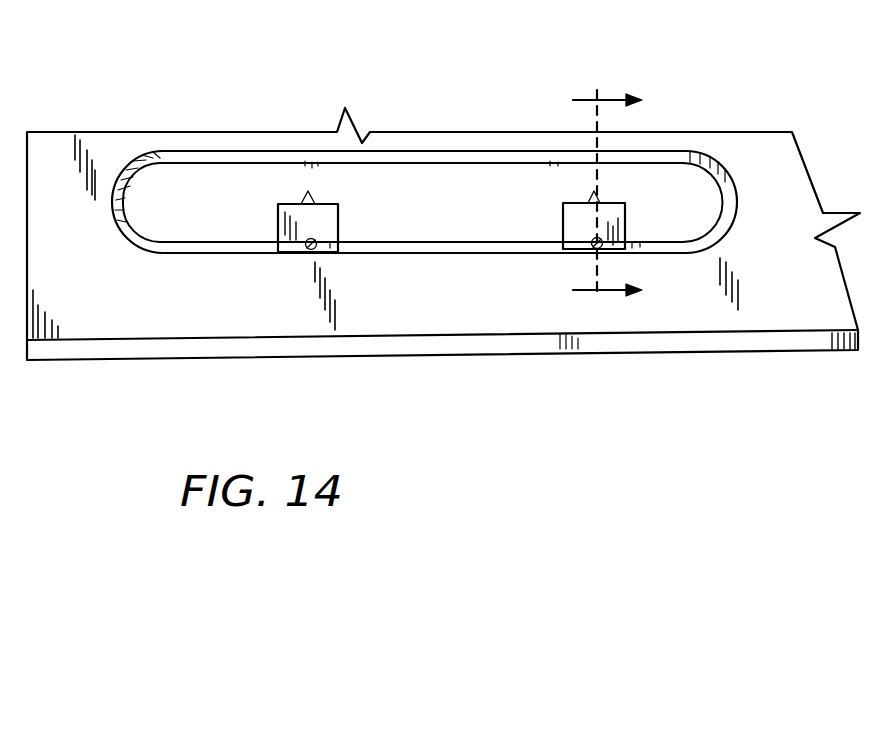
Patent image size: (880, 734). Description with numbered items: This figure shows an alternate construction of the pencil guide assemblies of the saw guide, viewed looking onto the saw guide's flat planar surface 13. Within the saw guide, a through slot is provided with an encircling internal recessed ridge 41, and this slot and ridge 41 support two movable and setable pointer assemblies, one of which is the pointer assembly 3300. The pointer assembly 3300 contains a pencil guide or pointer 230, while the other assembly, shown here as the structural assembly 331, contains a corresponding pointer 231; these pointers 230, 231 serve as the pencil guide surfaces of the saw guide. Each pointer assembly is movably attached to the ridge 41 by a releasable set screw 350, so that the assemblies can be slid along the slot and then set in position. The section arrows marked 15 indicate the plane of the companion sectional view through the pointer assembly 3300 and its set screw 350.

The second flat planar surface 13 is at (757, 158).
The recessed ridge 41 is at (258, 248).
The pointer 231 is at (304, 196).
The pencil guide surface structural assembly 331 is at (327, 215).
The pointer assembly 3300 is at (573, 213).
The pointer 230 is at (593, 193).
The releasable set screw 350 is at (590, 250).
The section line 15- 15 is at (632, 195).